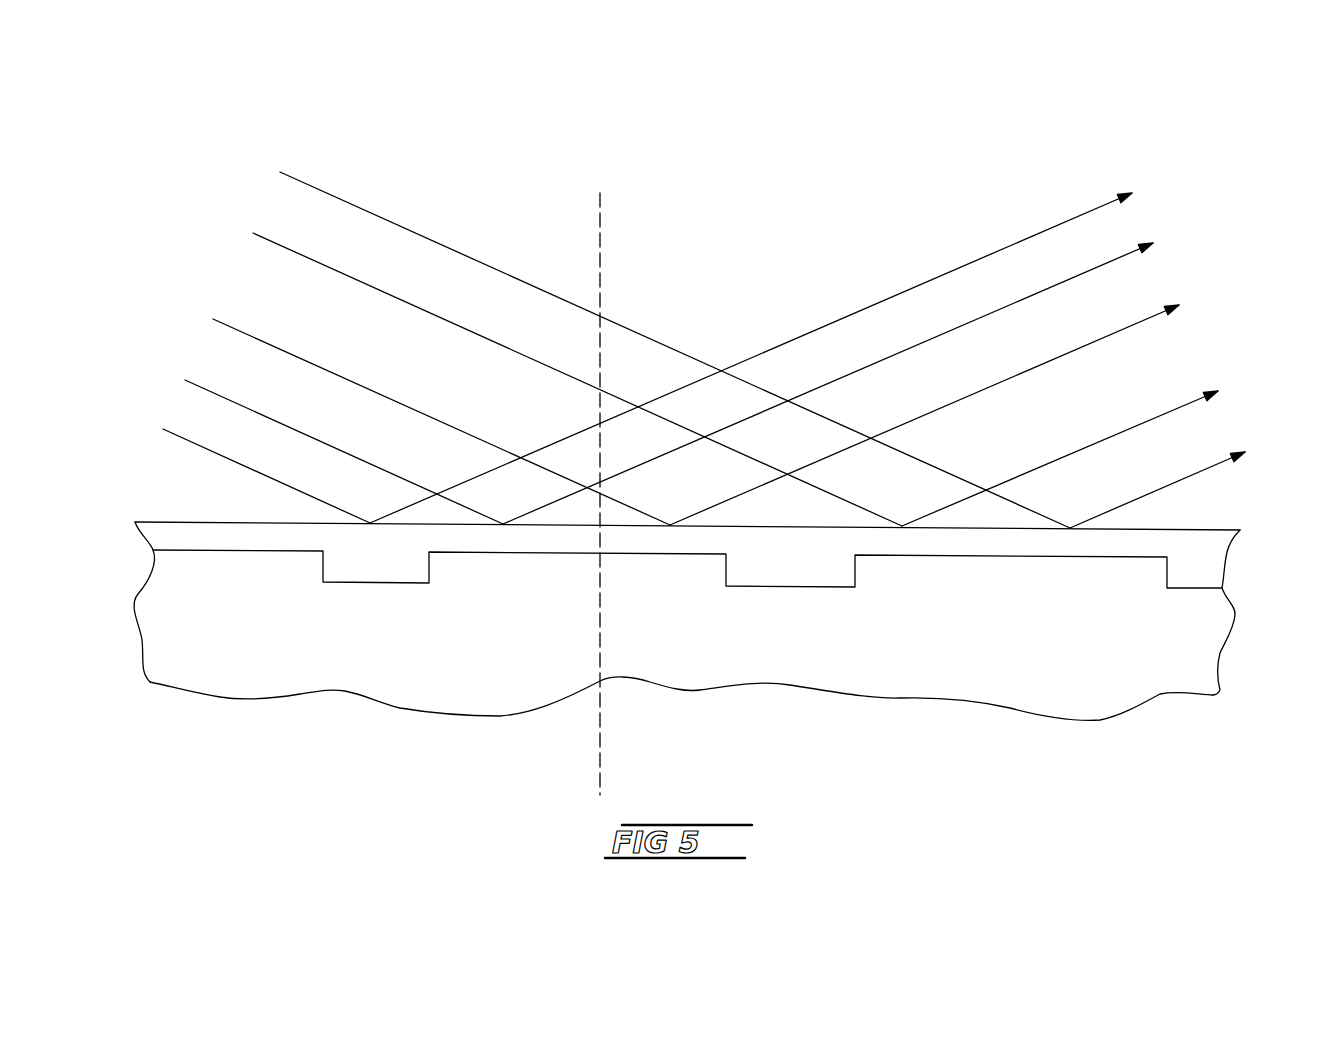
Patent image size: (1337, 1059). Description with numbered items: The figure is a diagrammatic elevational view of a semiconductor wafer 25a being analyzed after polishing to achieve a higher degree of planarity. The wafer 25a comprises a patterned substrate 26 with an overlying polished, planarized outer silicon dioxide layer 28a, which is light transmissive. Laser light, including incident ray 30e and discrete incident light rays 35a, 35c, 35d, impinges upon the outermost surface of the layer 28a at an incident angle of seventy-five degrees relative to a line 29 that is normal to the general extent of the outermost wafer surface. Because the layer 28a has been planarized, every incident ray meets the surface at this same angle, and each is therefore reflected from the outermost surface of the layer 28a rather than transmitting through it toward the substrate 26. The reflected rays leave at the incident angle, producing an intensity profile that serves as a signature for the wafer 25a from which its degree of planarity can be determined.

The wafer 25a is at (1003, 180).
The patterned substrate 26 is at (178, 657).
The polished, planarized outer silicon dioxide layer 28a is at (1200, 550).
The line 29 is at (603, 227).
The incident ray 30e is at (320, 190).
The incident light ray 35a is at (163, 429).
The incident light ray 35c is at (235, 329).
The incident light ray 35d is at (278, 244).